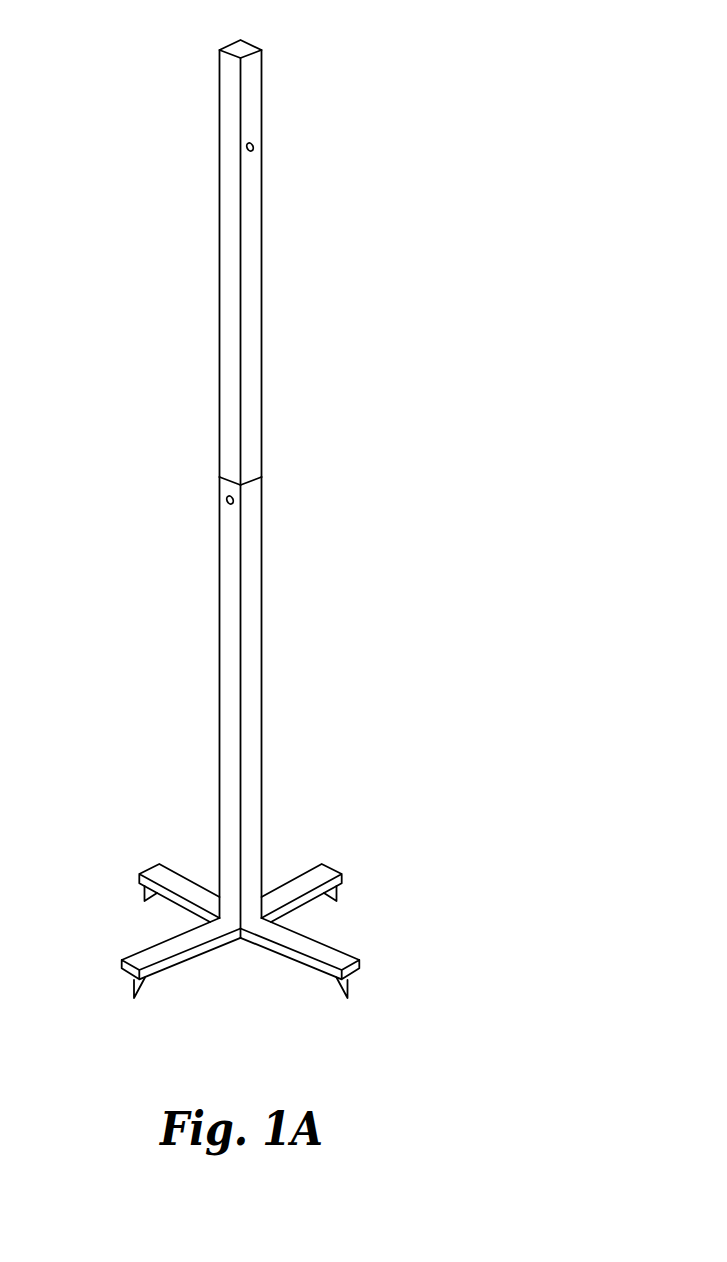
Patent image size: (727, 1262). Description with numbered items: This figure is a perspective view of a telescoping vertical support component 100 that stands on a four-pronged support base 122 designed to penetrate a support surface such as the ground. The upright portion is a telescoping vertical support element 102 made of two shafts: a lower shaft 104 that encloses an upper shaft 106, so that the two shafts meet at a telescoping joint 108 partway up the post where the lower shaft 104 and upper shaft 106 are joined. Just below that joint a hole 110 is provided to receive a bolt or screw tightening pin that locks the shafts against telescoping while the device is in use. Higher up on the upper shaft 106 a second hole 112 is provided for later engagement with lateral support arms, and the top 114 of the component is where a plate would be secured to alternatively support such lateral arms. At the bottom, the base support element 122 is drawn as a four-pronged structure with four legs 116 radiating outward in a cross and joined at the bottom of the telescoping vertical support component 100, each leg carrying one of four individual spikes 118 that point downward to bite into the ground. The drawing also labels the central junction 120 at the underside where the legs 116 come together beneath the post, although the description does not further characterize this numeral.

The telescoping vertical support component 100 is at (306, 529).
The telescoping vertical support element 102 is at (122, 447).
The lower shaft 104 is at (262, 623).
The upper shaft 106 is at (262, 249).
The telescoping joint 108 is at (251, 482).
The hole 110 is at (226, 500).
The hole 112 is at (254, 146).
The top 114 is at (262, 49).
The legs 116 is at (323, 940).
The spikes 118 is at (352, 983).
The base center junction 120 is at (240, 938).
The four-pronged support base 122 is at (102, 867).